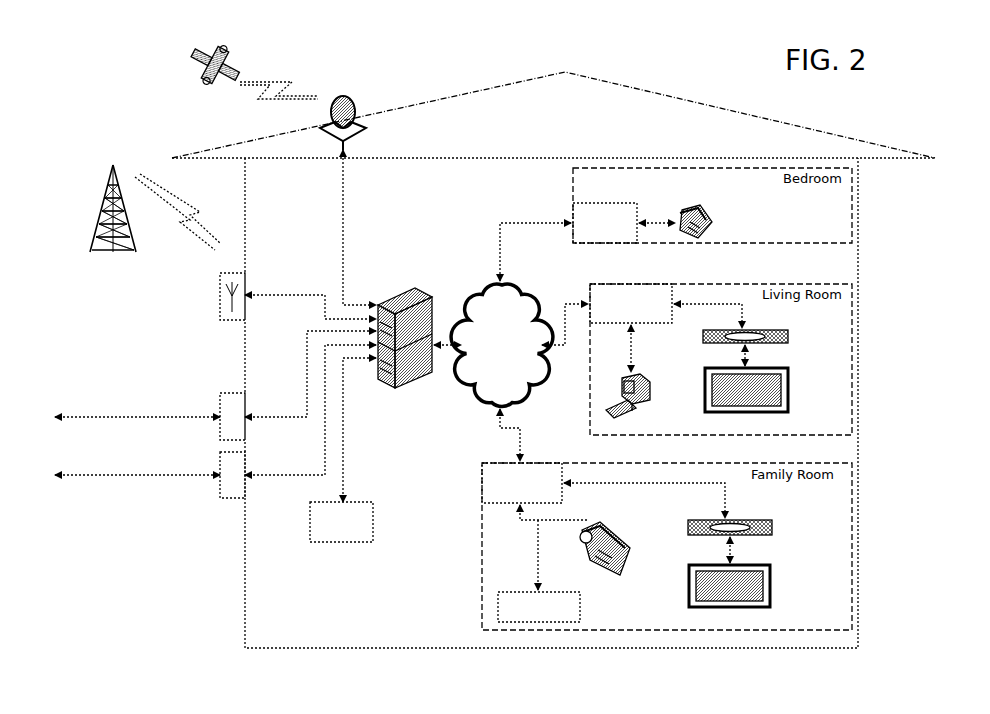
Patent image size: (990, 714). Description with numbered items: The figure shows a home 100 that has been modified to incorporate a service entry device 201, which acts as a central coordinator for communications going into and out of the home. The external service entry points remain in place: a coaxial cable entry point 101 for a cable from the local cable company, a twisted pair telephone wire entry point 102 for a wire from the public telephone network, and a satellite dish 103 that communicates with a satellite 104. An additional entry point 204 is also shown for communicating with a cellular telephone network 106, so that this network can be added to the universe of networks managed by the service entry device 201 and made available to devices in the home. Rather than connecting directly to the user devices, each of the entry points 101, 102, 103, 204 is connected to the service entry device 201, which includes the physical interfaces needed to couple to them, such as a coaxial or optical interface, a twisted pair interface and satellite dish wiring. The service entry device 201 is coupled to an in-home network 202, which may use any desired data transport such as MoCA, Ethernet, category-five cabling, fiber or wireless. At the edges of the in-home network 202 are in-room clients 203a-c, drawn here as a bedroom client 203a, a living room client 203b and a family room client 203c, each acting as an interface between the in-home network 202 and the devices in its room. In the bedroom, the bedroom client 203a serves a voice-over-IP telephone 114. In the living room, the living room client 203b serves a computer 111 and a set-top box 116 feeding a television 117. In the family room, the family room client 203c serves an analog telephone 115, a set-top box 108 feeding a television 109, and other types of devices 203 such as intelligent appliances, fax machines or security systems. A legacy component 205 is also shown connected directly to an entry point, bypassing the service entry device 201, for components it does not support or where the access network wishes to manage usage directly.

The home 100 is at (568, 71).
The coaxial cable entry point 101 is at (220, 395).
The twisted pair telephone wire entry point 102 is at (220, 497).
The satellite dish 103 is at (352, 92).
The satellite 104 is at (195, 84).
The cellular telephone network 106 is at (113, 165).
The set-top box 108 is at (775, 535).
The television 109 is at (773, 585).
The computer 111 is at (650, 412).
The voice-over-IP telephone 114 is at (715, 215).
The analog telephone 115 is at (623, 535).
The set-top box 116 is at (790, 339).
The television 117 is at (790, 390).
The service entry device 201 is at (415, 293).
The in-home network 202 is at (519, 342).
The other types of devices 203 is at (539, 571).
The bedroom client 203a is at (605, 223).
The living room client 203b is at (631, 303).
The family room client 203c is at (522, 483).
The additional entry point 204 is at (220, 290).
The legacy component 205 is at (343, 450).